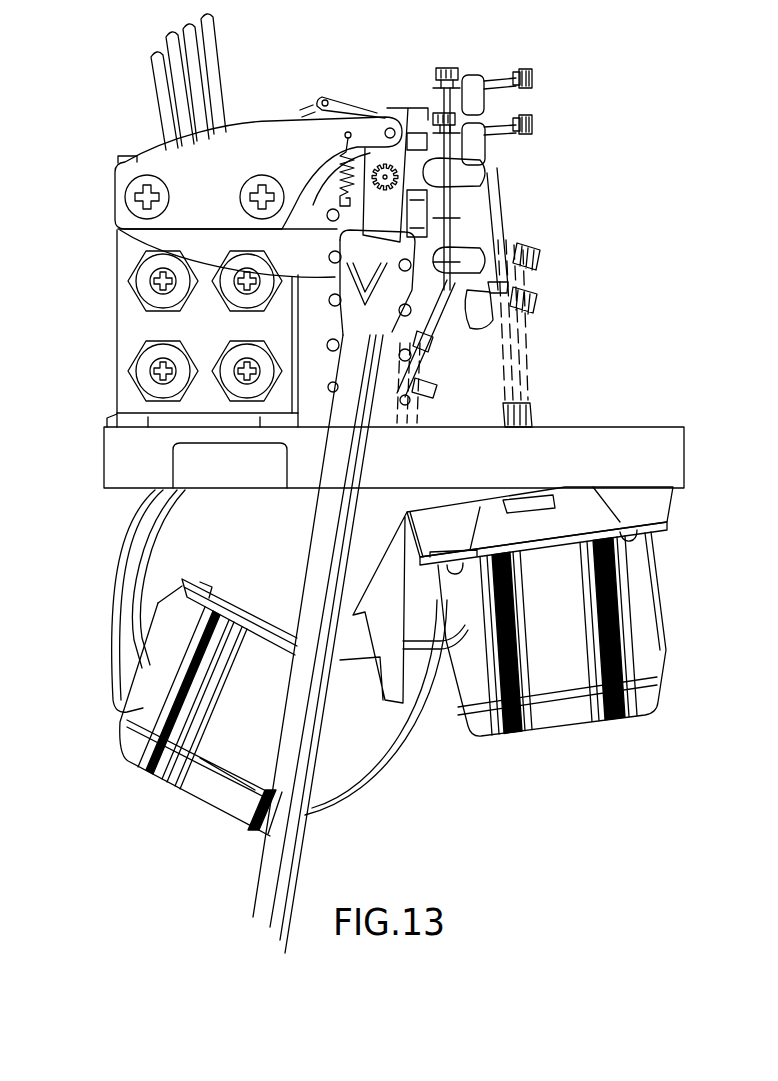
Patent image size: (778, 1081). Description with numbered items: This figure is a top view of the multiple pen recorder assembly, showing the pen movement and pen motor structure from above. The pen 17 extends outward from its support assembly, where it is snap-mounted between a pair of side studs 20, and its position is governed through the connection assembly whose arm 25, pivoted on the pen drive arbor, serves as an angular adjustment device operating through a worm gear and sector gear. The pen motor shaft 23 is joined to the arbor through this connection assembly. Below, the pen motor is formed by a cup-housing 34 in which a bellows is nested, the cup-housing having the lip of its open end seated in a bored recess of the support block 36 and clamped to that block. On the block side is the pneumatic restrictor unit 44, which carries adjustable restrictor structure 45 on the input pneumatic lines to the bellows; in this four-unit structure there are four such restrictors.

The pen 17 is at (273, 847).
The side studs 20 is at (410, 268).
The pen motor shaft 23 is at (525, 380).
The arm 25 is at (345, 105).
The cup-housing 34 is at (571, 725).
The support block 36 is at (92, 437).
The pneumatic restrictor unit 44 is at (96, 353).
The restrictor structure 45 is at (134, 290).